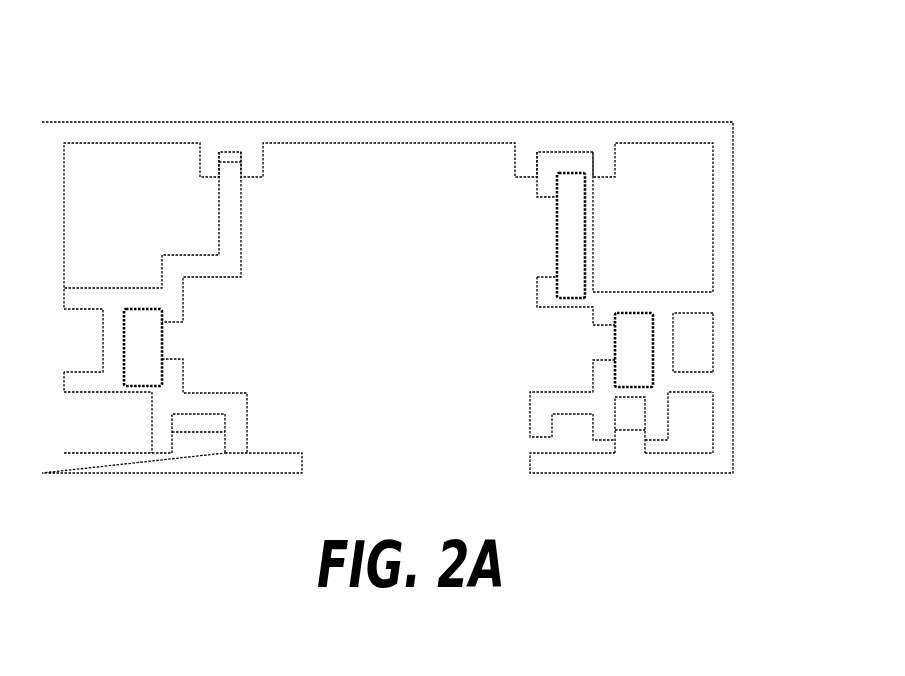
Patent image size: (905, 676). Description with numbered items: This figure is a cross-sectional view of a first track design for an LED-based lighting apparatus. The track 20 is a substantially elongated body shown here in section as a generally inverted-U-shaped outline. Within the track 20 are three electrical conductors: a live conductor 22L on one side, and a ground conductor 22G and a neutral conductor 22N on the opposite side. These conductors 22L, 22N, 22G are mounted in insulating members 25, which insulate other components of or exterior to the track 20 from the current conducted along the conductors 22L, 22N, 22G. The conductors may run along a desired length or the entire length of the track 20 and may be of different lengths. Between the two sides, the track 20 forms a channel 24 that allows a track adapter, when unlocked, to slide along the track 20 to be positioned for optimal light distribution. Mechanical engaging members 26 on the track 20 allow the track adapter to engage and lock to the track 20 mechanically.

The track 20 is at (390, 103).
The live conductor 22L is at (143, 328).
The ground conductor 22G is at (567, 231).
The neutral conductor 22N is at (630, 330).
The channel 24 is at (378, 372).
The insulating member 25 is at (593, 230).
The mechanical engaging member 26 is at (214, 277).